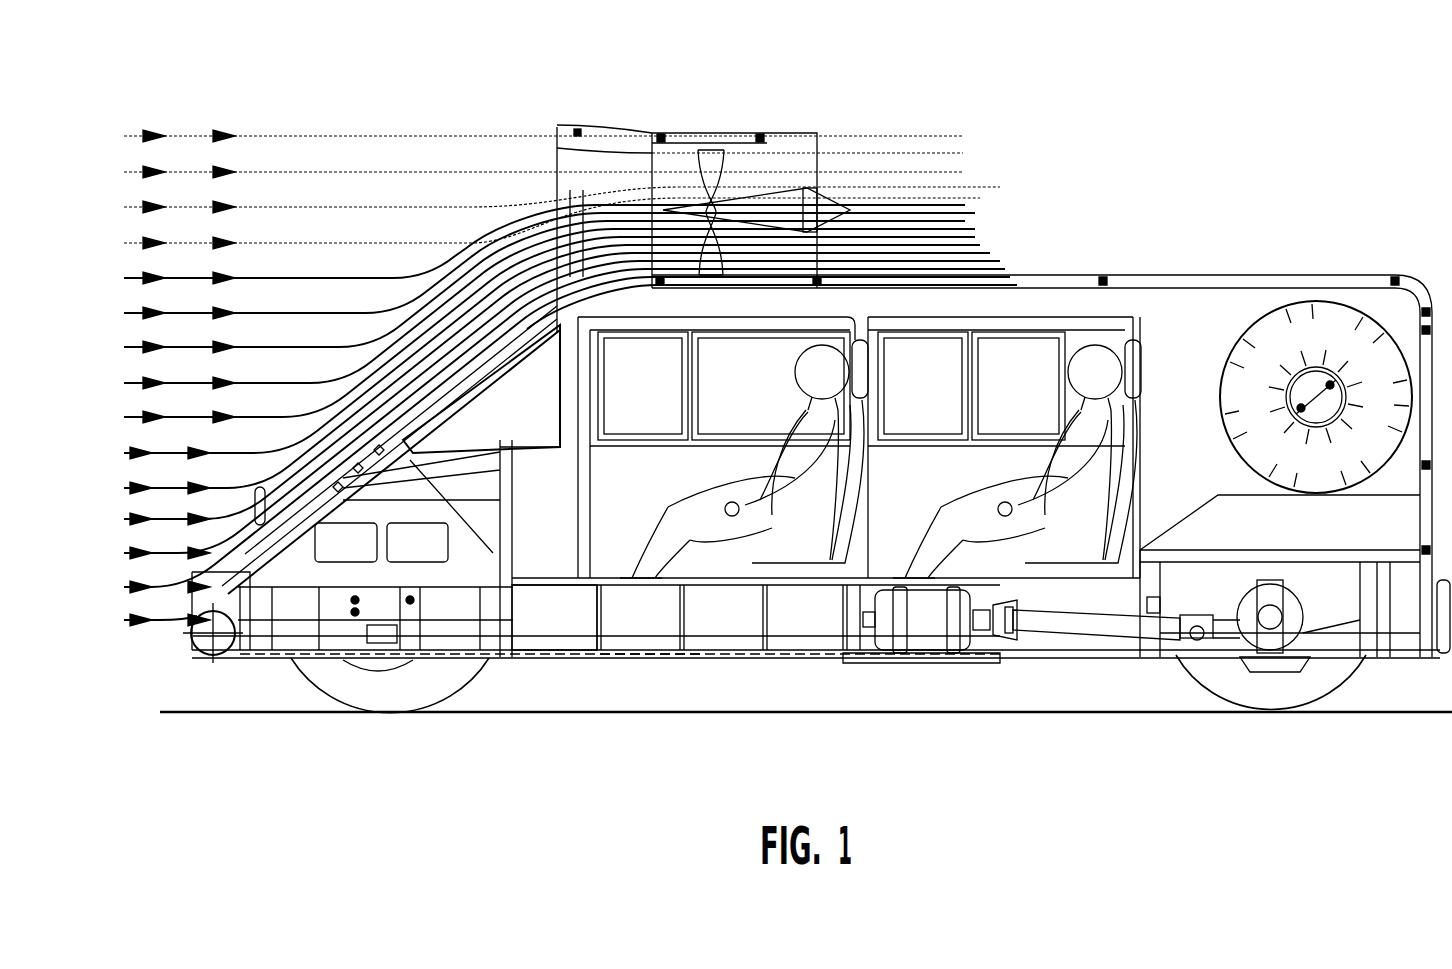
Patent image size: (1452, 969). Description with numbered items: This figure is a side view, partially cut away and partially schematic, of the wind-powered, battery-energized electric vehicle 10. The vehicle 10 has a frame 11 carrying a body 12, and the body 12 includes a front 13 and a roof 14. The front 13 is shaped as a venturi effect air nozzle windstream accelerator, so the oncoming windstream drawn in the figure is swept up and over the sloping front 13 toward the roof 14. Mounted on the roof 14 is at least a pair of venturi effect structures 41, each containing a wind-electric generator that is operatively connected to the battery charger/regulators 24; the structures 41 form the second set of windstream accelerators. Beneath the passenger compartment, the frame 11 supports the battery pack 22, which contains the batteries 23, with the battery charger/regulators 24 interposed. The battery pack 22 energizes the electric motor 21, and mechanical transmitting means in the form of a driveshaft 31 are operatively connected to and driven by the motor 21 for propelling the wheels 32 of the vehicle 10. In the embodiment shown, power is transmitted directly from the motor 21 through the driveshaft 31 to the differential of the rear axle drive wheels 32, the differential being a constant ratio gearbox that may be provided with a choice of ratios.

The vehicle 10 is at (1077, 228).
The frame 11 is at (1053, 650).
The body 12 is at (1193, 310).
The front 13 is at (472, 354).
The roof 14 is at (1157, 265).
The electric motor 21 is at (922, 664).
The battery pack 22 is at (630, 648).
The batteries 23 is at (563, 610).
The battery charger/regulators 24 is at (357, 565).
The driveshaft 31 is at (1115, 650).
The wheels 32 is at (1303, 658).
The venturi effect structures 41 is at (710, 132).